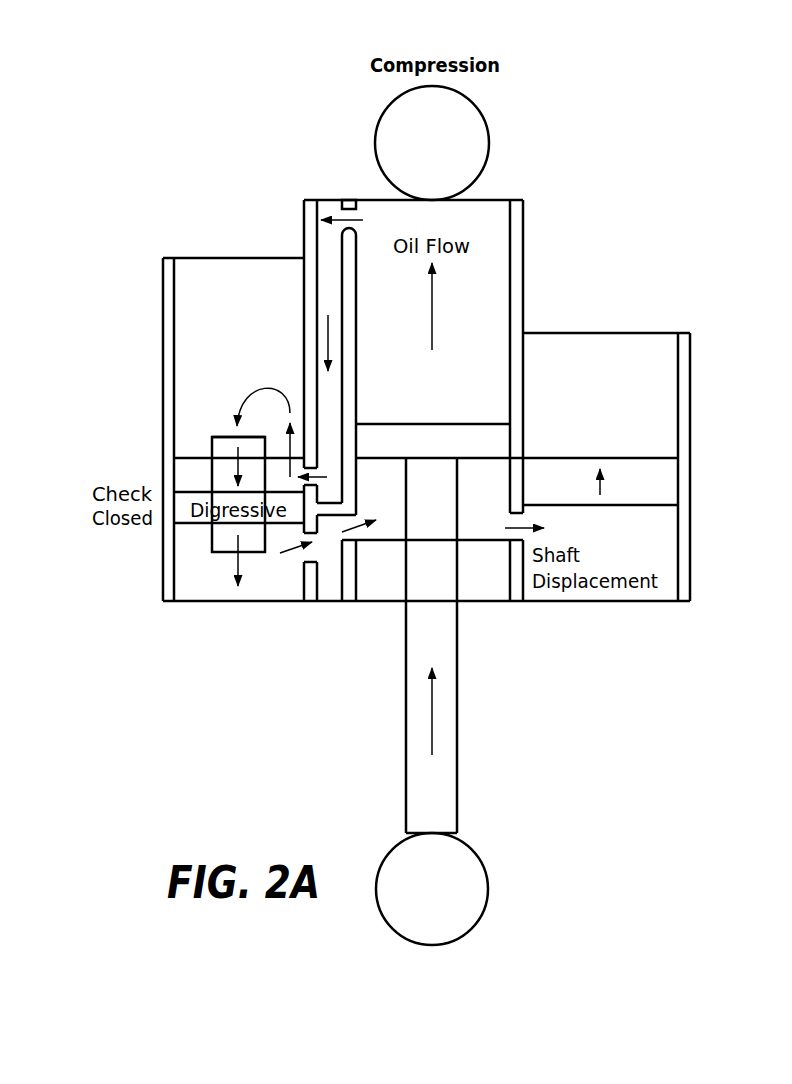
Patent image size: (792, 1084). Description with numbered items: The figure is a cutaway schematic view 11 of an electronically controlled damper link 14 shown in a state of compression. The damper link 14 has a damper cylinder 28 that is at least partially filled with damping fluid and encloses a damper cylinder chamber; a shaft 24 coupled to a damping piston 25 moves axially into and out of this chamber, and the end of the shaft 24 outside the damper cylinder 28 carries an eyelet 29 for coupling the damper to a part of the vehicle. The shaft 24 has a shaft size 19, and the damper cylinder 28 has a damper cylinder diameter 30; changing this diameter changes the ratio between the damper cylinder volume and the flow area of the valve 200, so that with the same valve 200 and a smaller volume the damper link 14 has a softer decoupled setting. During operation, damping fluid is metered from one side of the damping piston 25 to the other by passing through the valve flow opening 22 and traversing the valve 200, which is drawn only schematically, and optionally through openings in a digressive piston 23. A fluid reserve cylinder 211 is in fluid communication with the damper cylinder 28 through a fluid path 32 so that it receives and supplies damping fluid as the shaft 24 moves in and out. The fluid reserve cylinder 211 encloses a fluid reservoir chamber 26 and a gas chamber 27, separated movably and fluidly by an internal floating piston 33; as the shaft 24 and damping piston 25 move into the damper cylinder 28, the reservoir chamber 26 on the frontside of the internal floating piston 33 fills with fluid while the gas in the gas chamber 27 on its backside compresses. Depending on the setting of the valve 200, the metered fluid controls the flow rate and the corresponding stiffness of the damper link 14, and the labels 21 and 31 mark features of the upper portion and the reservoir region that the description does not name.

The cutaway schematic view 11 is at (301, 104).
The electronically controlled damper link 14 is at (181, 649).
The shaft size 19 is at (497, 787).
The upper mount 21 is at (489, 140).
The valve flow opening 22 is at (325, 213).
The digressive piston 23 is at (182, 508).
The shaft 24 is at (458, 700).
The damping piston 25 is at (468, 447).
The fluid reservoir chamber 26 is at (590, 598).
The gas chamber 27 is at (578, 347).
The damper cylinder 28 is at (523, 232).
The eyelet 29 is at (487, 887).
The damper cylinder diameter 30 is at (506, 388).
The left reservoir 31 is at (209, 258).
The fluid path 32 is at (265, 574).
The internal floating piston 33 is at (668, 470).
The valve 200 is at (222, 432).
The fluid reserve cylinder 211 is at (699, 566).